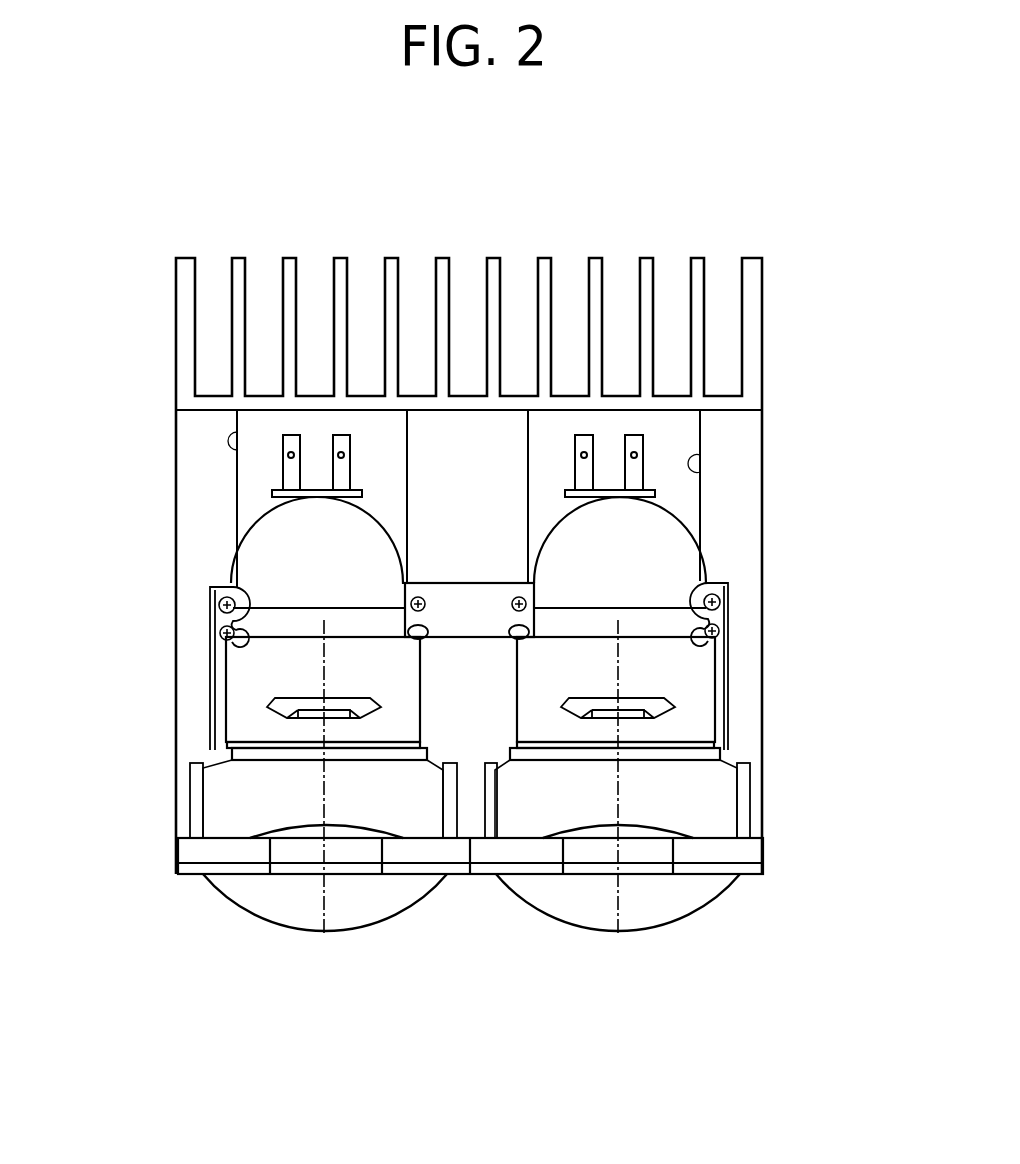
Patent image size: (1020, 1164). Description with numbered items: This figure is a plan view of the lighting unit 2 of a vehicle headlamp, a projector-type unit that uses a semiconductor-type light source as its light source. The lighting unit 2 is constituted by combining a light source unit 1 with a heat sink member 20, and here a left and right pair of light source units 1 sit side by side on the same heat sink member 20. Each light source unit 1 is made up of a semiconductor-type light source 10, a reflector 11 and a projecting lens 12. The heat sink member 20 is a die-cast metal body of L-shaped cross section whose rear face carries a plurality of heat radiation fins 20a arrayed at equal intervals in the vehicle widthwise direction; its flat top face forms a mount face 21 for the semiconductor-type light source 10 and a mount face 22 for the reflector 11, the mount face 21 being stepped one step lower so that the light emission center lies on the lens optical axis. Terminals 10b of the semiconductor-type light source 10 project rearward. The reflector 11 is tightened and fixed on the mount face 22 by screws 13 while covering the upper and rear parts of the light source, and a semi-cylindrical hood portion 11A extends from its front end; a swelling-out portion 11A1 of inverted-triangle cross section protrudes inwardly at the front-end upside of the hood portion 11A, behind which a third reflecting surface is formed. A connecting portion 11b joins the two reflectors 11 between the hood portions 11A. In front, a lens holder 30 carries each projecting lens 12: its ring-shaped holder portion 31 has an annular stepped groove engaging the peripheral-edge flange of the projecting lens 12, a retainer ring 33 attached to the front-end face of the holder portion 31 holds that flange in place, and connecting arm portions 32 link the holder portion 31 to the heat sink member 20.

The lighting unit 2 is at (133, 286).
The heat sink member 20 is at (770, 380).
The heat radiation fins 20a is at (543, 258).
The mount face of the semiconductor-type light source 21 is at (237, 432).
The mount face of the reflector 22 is at (466, 432).
The light source unit 1 is at (230, 555).
The semiconductor-type light source 10 is at (498, 359).
The terminal 10b is at (291, 434).
The reflector 11 is at (258, 572).
The hood portion 11A is at (237, 677).
The swelling-out portion 11A1 is at (300, 710).
The housing connecting portion 11b is at (466, 605).
The projecting lens 12 is at (283, 915).
The screws 13 is at (216, 600).
The lens holder 30 is at (172, 853).
The holder portion 31 is at (218, 853).
The connecting arm portions 32 is at (192, 795).
The retainer ring 33 is at (400, 878).